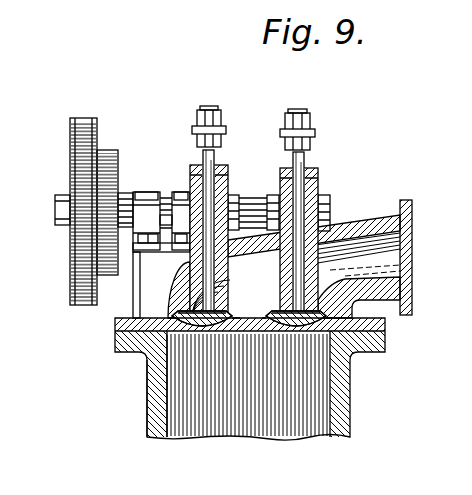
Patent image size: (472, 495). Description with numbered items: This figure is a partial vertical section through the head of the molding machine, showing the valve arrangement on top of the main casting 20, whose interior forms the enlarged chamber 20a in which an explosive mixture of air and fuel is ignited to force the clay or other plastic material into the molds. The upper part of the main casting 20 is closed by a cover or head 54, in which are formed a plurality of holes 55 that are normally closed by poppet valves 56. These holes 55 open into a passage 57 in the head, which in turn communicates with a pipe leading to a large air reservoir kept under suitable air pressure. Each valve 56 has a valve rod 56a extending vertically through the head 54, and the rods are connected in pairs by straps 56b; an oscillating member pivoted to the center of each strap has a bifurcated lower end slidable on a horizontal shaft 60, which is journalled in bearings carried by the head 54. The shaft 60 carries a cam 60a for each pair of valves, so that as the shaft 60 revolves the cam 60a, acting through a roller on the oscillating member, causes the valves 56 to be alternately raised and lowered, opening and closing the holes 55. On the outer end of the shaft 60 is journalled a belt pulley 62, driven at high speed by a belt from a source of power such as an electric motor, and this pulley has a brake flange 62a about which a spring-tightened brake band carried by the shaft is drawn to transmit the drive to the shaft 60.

The belt pulley 62 is at (70, 136).
The brake flange 62a is at (108, 152).
The horizontal shaft 60 is at (125, 197).
The cam 60a is at (272, 196).
The passage 57 is at (395, 255).
The cover or head 54 is at (172, 276).
The holes 55 is at (292, 308).
The poppet valves 56 is at (298, 320).
The valve rods 56a is at (295, 160).
The straps 56b is at (296, 128).
The main casting 20 is at (352, 391).
The enlarged chamber 20a is at (147, 392).